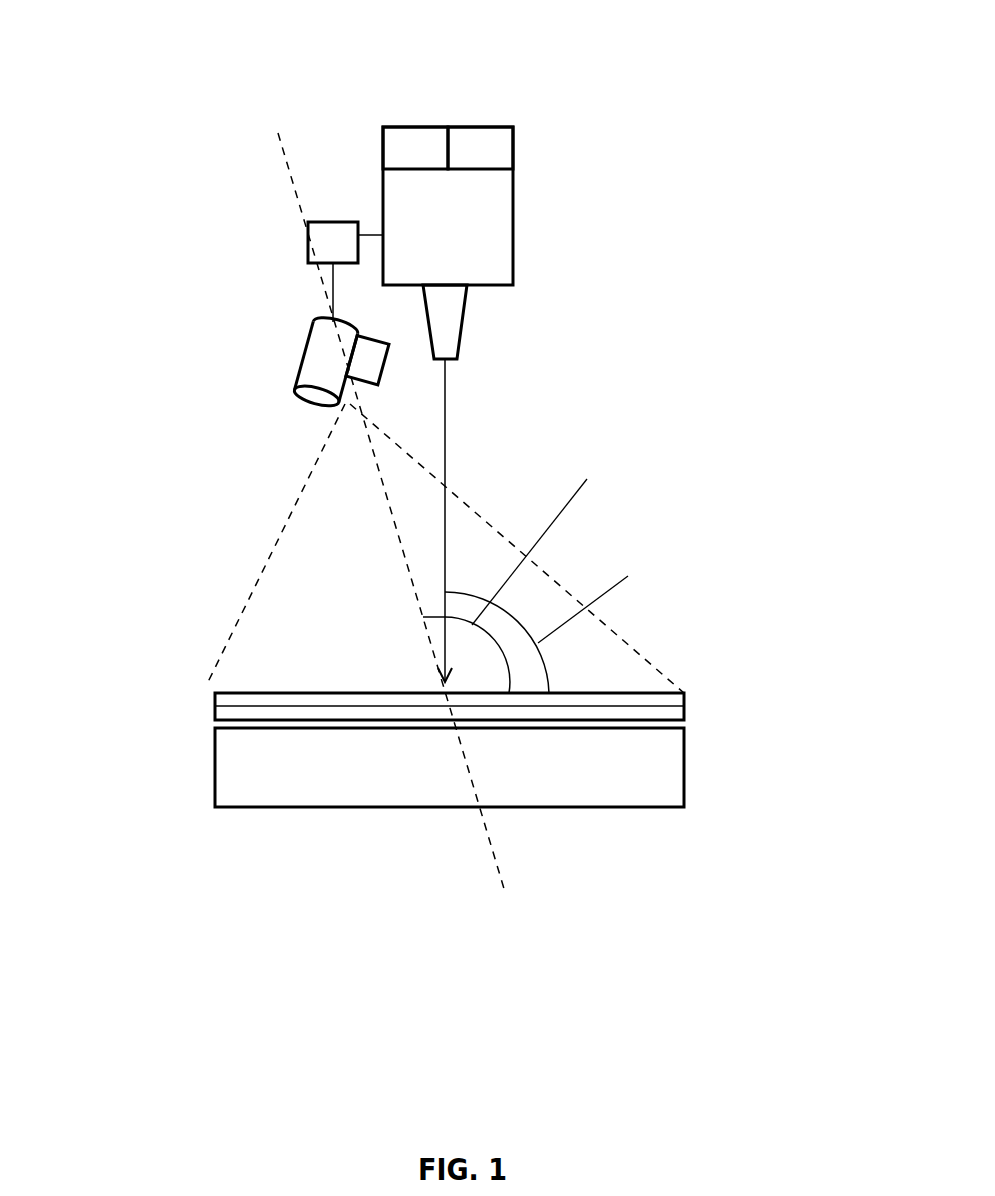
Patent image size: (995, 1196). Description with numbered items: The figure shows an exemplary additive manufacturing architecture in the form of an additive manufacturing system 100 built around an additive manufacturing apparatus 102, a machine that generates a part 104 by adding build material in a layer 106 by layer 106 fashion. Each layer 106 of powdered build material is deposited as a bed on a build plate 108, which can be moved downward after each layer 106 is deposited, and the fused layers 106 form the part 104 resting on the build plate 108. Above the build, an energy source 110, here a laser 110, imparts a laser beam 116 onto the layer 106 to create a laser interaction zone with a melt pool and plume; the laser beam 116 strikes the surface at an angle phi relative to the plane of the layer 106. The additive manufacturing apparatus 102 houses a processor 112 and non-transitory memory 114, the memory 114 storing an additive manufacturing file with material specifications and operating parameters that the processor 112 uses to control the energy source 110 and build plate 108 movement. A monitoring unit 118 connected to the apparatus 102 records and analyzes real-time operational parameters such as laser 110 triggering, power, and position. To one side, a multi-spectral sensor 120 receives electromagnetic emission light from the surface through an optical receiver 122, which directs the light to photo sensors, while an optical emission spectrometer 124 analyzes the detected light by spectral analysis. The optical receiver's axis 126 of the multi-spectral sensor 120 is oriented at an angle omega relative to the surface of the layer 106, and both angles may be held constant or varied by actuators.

The additive manufacturing system 100 is at (198, 132).
The additive manufacturing apparatus 102 is at (497, 244).
The part 104 is at (684, 693).
The layer 106 is at (232, 699).
The build plate 108 is at (660, 775).
The energy source 110 is at (448, 330).
The processor 112 is at (420, 150).
The non-transitory memory 114 is at (483, 145).
The laser beam 116 is at (450, 443).
The monitoring unit 118 is at (328, 235).
The multi-spectral sensor 120 is at (322, 377).
The optical receiver 122 is at (337, 408).
The optical emission spectrometer 124 is at (377, 343).
The optical receiver's axis 126 is at (285, 168).